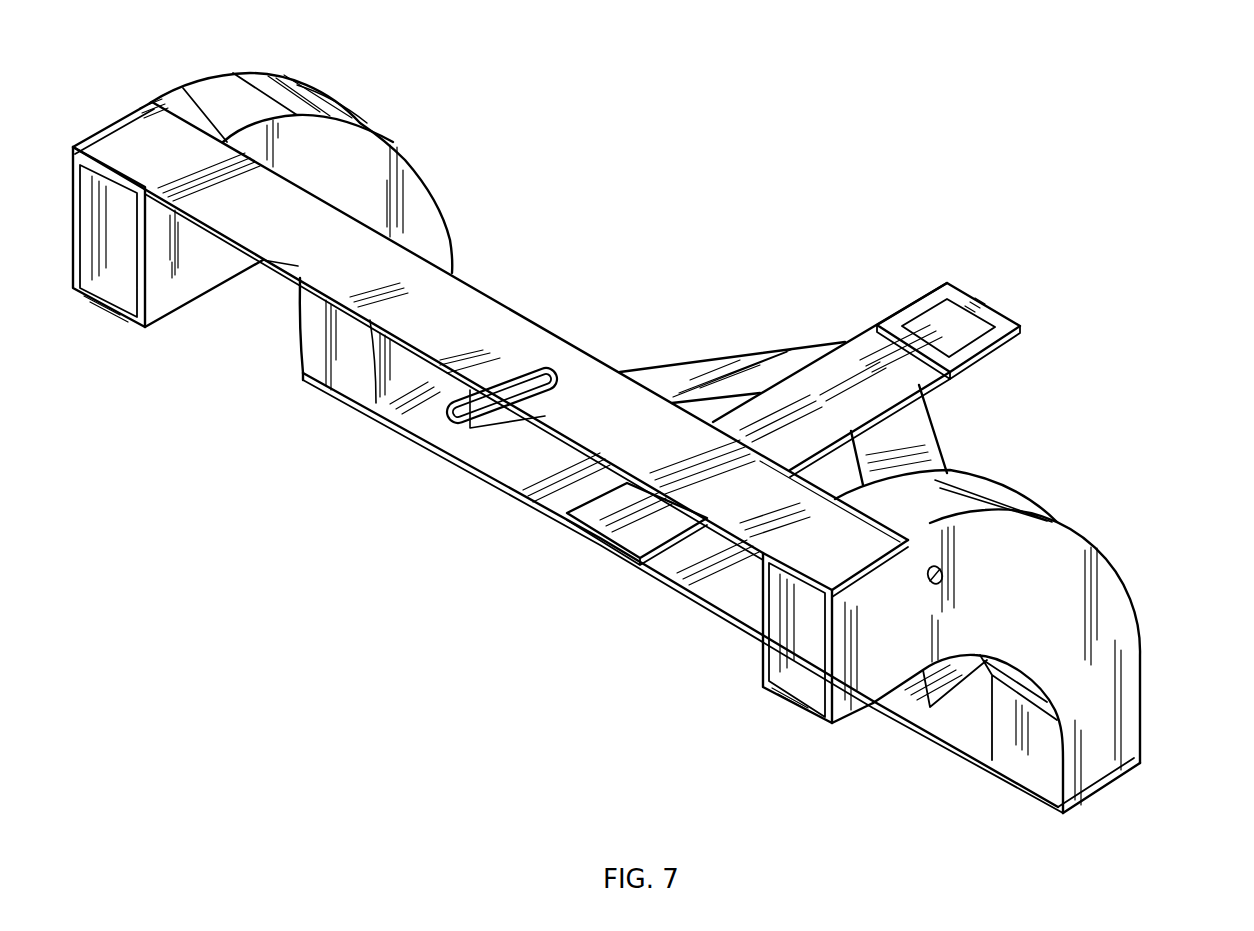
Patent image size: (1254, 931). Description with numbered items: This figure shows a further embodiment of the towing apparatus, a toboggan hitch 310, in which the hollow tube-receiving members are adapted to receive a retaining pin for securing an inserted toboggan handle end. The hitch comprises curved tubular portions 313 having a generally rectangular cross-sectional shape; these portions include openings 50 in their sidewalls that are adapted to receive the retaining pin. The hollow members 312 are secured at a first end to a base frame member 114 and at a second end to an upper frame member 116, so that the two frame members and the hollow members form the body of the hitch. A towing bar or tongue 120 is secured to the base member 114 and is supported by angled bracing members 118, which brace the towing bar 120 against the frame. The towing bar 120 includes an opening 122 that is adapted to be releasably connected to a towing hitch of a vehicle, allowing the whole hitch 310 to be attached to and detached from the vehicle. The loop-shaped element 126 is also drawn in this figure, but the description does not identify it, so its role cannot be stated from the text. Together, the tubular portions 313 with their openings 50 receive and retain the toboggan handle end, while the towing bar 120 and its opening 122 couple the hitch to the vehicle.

The toboggan hitch 310 is at (649, 254).
The hollow members 312 is at (249, 92).
The curved tubular portions 313 is at (126, 306).
The base frame member 114 is at (505, 462).
The upper frame member 116 is at (450, 292).
The angled bracing members 118 is at (720, 366).
The towing bar 120 is at (866, 340).
The opening 122 is at (980, 322).
The clip loop 126 is at (551, 360).
The openings 50 is at (944, 573).